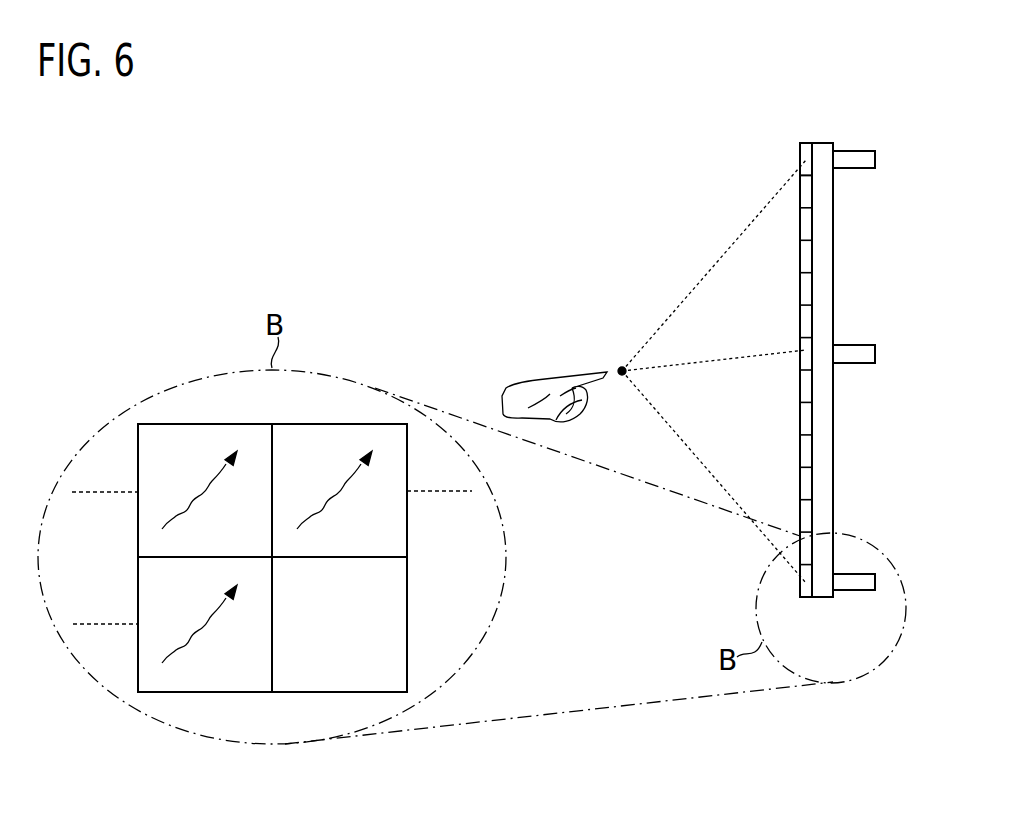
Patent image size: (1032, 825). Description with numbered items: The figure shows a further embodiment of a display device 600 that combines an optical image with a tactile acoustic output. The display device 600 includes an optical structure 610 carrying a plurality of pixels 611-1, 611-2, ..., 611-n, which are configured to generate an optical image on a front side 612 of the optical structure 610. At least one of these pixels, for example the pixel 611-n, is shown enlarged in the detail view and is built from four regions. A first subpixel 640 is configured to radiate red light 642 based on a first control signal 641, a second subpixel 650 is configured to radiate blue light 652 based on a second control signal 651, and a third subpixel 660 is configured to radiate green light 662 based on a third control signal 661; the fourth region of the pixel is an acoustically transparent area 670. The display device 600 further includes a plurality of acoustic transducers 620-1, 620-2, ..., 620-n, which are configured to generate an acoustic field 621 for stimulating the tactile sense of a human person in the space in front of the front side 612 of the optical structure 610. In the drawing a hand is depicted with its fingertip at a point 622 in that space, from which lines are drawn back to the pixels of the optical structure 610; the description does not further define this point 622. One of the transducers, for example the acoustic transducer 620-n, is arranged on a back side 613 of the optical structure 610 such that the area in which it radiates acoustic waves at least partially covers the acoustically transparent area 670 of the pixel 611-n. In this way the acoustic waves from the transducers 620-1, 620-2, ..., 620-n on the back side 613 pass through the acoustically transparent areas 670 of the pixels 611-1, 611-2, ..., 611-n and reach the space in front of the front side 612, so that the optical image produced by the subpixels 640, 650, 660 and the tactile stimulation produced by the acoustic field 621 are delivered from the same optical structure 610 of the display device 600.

The display device 600 is at (84, 751).
The optical structure 610 is at (795, 369).
The pixel 611-1 is at (800, 153).
The pixel 611-2 is at (800, 190).
The pixel 611-n is at (800, 585).
The front side 612 is at (730, 208).
The back side 613 is at (834, 282).
The acoustic transducer 620-1 is at (852, 170).
The acoustic transducer 620-2 is at (852, 364).
The acoustic transducer 620-n is at (853, 592).
The acoustic field 621 is at (630, 335).
The touch point 622 is at (620, 369).
The first subpixel 640 is at (196, 468).
The first control signal 641 is at (112, 492).
The red light 642 is at (197, 495).
The second subpixel 650 is at (334, 468).
The second control signal 651 is at (440, 492).
The blue light 652 is at (348, 500).
The third subpixel 660 is at (196, 608).
The third control signal 661 is at (112, 624).
The green light 662 is at (211, 634).
The acoustically transparent area 670 is at (362, 640).